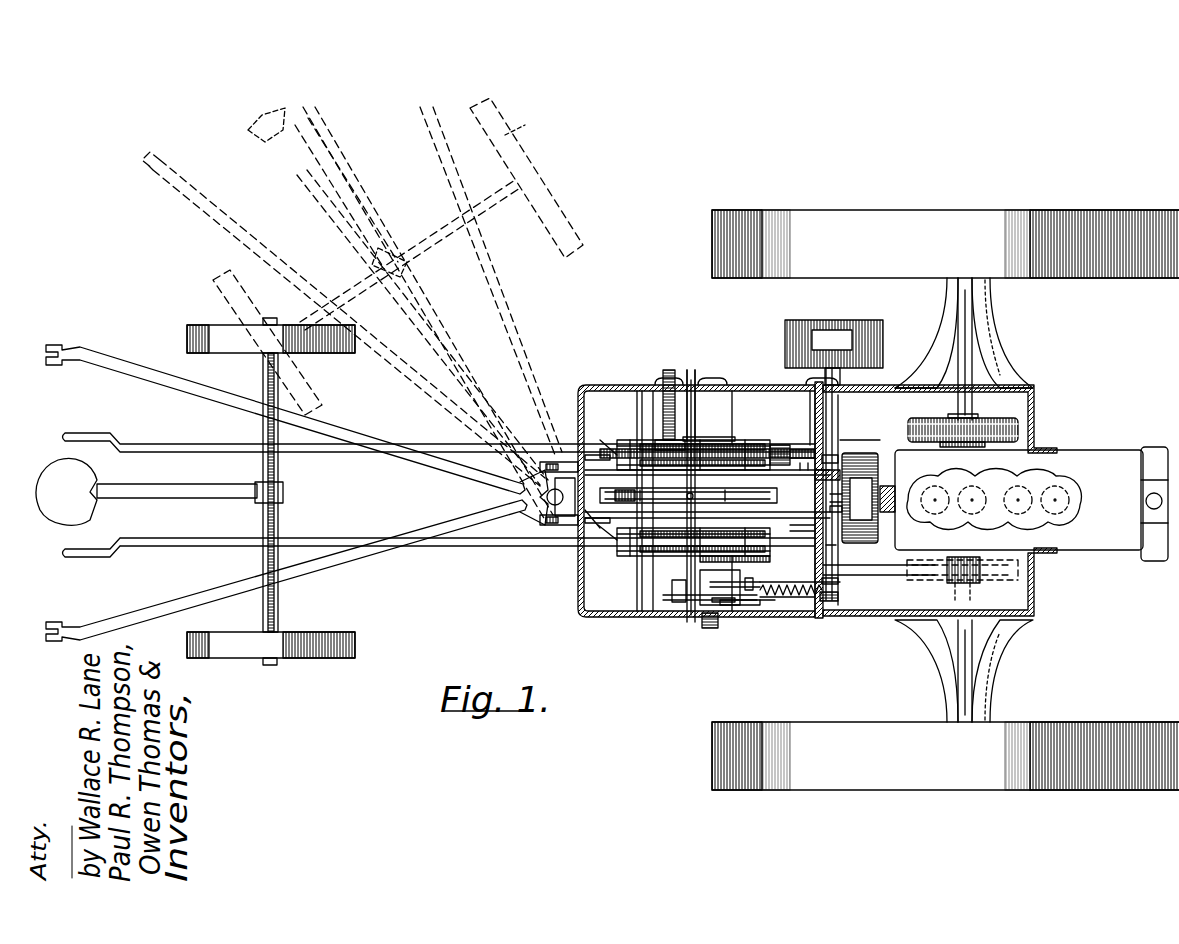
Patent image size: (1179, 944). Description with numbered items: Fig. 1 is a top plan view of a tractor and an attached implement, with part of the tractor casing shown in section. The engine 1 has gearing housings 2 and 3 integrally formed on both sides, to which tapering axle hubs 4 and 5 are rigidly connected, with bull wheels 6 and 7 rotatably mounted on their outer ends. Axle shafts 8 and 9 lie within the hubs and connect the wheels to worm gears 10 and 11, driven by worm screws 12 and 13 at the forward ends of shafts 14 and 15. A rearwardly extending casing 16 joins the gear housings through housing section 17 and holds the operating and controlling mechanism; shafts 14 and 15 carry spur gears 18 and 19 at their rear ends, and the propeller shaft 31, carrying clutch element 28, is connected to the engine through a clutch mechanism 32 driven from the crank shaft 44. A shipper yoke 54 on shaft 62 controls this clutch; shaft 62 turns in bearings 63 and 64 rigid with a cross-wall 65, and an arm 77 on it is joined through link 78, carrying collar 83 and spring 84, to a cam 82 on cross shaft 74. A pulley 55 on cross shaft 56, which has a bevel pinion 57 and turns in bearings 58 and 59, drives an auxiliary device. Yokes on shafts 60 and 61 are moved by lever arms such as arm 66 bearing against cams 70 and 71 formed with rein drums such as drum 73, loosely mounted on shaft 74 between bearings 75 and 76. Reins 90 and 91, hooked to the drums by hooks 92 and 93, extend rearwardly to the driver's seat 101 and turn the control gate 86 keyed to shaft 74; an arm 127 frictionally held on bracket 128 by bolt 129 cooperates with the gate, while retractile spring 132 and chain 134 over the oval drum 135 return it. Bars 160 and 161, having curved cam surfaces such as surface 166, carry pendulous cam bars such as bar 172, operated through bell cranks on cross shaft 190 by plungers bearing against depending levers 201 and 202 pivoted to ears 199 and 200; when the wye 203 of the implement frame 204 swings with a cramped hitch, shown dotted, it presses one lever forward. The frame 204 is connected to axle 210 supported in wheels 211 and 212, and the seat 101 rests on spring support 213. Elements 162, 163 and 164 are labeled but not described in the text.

The engine 1 is at (1102, 455).
The gearing housing 2 is at (1036, 405).
The gearing housing 3 is at (1036, 598).
The tapering axle hub 4 is at (993, 330).
The tapering axle hub 5 is at (990, 672).
The bull wheel 6 is at (1072, 278).
The bull wheel 7 is at (1072, 722).
The axle shaft 8 is at (972, 370).
The axle shaft 9 is at (972, 632).
The worm gear 10 is at (995, 420).
The worm gear 11 is at (985, 583).
The worm screw 12 is at (968, 447).
The worm screw 13 is at (970, 557).
The shaft 14 is at (842, 418).
The shaft 15 is at (868, 576).
The casing 16 is at (600, 385).
The housing section 17 is at (840, 617).
The spur gear 18 is at (668, 395).
The spur gear 19 is at (722, 612).
The clutch element 28 is at (770, 470).
The propeller shaft 31 is at (790, 476).
The clutch mechanism 32 is at (868, 441).
The crank shaft 44 is at (890, 488).
The shipper fork or yoke 54 is at (850, 499).
The pulley 55 is at (834, 344).
The cross shaft 56 is at (834, 420).
The bevel pinion 57 is at (860, 498).
The bearing 58 is at (838, 462).
The bearing 59 is at (843, 380).
The shaft 60 is at (653, 418).
The shaft 61 is at (734, 420).
The shaft 62 is at (834, 550).
The bearing 63 is at (840, 582).
The bearing 64 is at (850, 513).
The cross-wall 65 is at (812, 425).
The lever arm 66 is at (655, 445).
The cam 70 is at (705, 436).
The cam 71 is at (695, 580).
The rein drum or sheave 73 is at (760, 548).
The cross shaft 74 is at (695, 410).
The bearing 75 is at (695, 385).
The bearing 76 is at (680, 617).
The arm 77 is at (840, 597).
The link 78 is at (745, 605).
The cam 82 is at (665, 597).
The collar 83 is at (768, 612).
The spring 84 is at (790, 600).
The control or gate member 86 is at (760, 496).
The rein 90 is at (515, 325).
The rein 91 is at (445, 320).
The hook 92 is at (603, 440).
The hook 93 is at (605, 530).
The driver's seat 101 is at (160, 316).
The arm 127 is at (688, 493).
The fixed bracket 128 is at (550, 500).
The bolt 129 is at (590, 530).
The retractile spring 132 is at (800, 576).
The chain 134 is at (737, 578).
The elongated drum or sheave 135 is at (670, 584).
The bar 160 is at (799, 446).
The bar 161 is at (775, 556).
The gear 162 is at (802, 460).
The bearing 163 is at (601, 463).
The gear 164 is at (799, 527).
The cam surface 166 is at (601, 521).
The cam bar 172 is at (703, 448).
The cross shaft 190 is at (637, 405).
The ear 199 is at (565, 462).
The ear 200 is at (565, 525).
The depending lever 201 is at (485, 482).
The depending lever 202 is at (540, 510).
The wye 203 is at (490, 510).
The frame 204 is at (405, 365).
The axle 210 is at (423, 255).
The wheel 211 is at (515, 145).
The wheel 212 is at (220, 290).
The spring support 213 is at (363, 210).